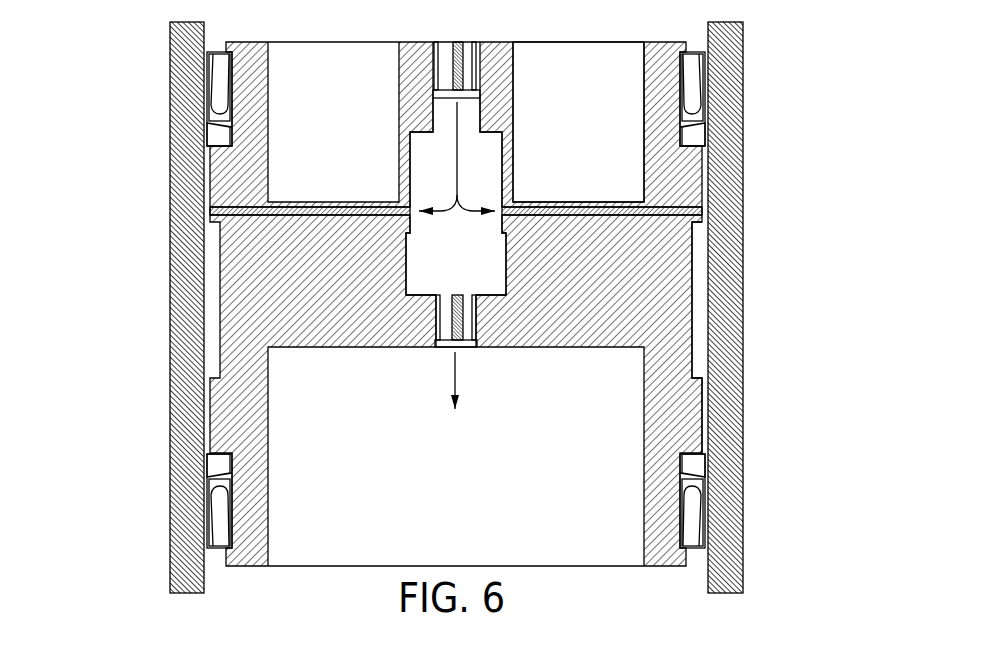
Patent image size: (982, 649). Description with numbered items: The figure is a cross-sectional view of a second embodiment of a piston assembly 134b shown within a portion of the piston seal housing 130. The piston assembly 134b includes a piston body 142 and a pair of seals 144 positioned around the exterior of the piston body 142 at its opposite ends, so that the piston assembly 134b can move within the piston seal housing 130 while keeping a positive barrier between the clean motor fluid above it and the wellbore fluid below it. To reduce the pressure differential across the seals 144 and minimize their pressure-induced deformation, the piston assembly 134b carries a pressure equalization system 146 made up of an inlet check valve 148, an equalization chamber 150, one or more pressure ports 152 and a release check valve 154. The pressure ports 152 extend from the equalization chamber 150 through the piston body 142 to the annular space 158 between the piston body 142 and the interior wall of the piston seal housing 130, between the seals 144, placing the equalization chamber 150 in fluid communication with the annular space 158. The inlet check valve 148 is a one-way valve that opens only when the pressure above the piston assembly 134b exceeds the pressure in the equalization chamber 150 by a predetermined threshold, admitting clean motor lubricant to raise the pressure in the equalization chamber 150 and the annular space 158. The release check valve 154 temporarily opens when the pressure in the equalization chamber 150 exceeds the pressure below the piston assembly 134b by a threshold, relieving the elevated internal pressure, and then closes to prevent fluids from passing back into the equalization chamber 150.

The piston seal housing 130 is at (733, 512).
The piston assembly 134b is at (152, 270).
The piston body 142 is at (680, 176).
The seals 144 is at (697, 103).
The pressure equalization system 146 is at (536, 148).
The inlet check valve 148 is at (442, 55).
The equalization chamber 150 is at (420, 294).
The pressure ports 152 is at (223, 212).
The release check valve 154 is at (466, 350).
The annular space 158 is at (705, 392).